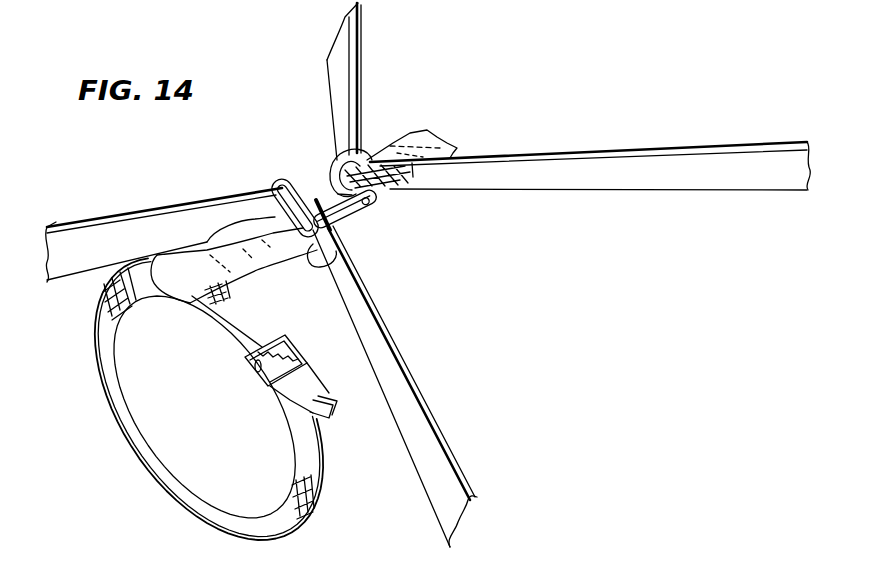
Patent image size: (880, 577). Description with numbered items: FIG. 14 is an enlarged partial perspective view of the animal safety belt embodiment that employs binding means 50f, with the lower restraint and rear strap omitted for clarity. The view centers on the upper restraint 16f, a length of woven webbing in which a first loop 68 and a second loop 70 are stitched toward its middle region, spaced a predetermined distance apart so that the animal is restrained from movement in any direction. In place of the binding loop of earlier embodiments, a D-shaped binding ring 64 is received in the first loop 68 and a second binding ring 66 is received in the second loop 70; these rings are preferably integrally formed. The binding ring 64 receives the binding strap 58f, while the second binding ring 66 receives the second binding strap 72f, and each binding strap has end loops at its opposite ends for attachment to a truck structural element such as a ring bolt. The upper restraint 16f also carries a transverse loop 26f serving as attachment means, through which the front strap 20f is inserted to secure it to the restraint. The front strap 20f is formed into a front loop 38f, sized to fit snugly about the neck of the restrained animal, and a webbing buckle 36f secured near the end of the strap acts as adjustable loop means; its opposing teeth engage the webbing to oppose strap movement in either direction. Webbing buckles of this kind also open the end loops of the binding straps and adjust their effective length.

The binding means 50f is at (312, 116).
The binding strap 58f is at (667, 165).
The upper restraint 16f is at (407, 145).
The binding ring 64 is at (334, 168).
The loop 26f is at (207, 250).
The second binding ring 66 is at (280, 190).
The first loop 68 is at (372, 205).
The second loop 70 is at (347, 260).
The second binding strap 72f is at (420, 418).
The front strap 20f is at (310, 460).
The front loop 38f is at (236, 431).
The webbing buckle 36f is at (295, 345).